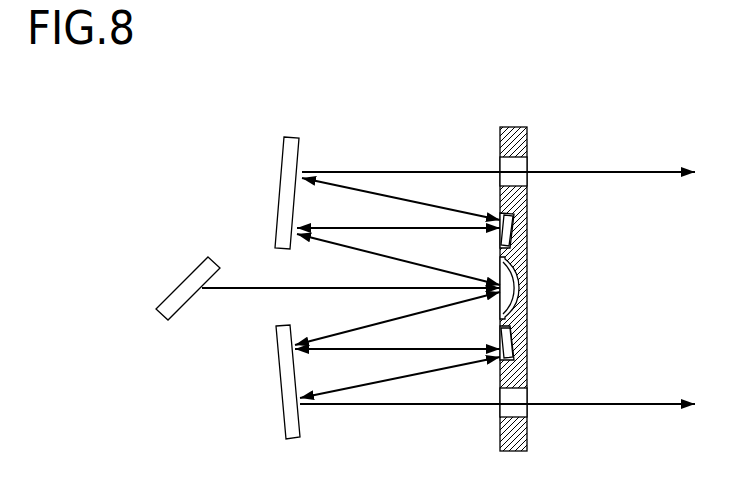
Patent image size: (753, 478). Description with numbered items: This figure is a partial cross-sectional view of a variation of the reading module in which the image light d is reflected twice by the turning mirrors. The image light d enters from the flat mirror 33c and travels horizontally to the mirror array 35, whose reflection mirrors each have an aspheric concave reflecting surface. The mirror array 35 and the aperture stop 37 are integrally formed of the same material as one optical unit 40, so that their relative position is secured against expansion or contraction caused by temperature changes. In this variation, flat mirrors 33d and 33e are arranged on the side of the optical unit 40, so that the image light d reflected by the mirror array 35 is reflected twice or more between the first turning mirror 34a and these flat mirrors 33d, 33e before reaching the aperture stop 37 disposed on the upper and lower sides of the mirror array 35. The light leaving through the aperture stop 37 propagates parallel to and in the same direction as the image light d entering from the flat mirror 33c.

The optical unit 40 is at (500, 134).
The aperture stop 37 is at (527, 164).
The mirror array 35 is at (527, 291).
The flat mirror 33d is at (527, 233).
The flat mirror 33e is at (527, 347).
The first turning mirror 34a is at (290, 163).
The flat mirror 33c is at (187, 290).
The image light d is at (242, 290).